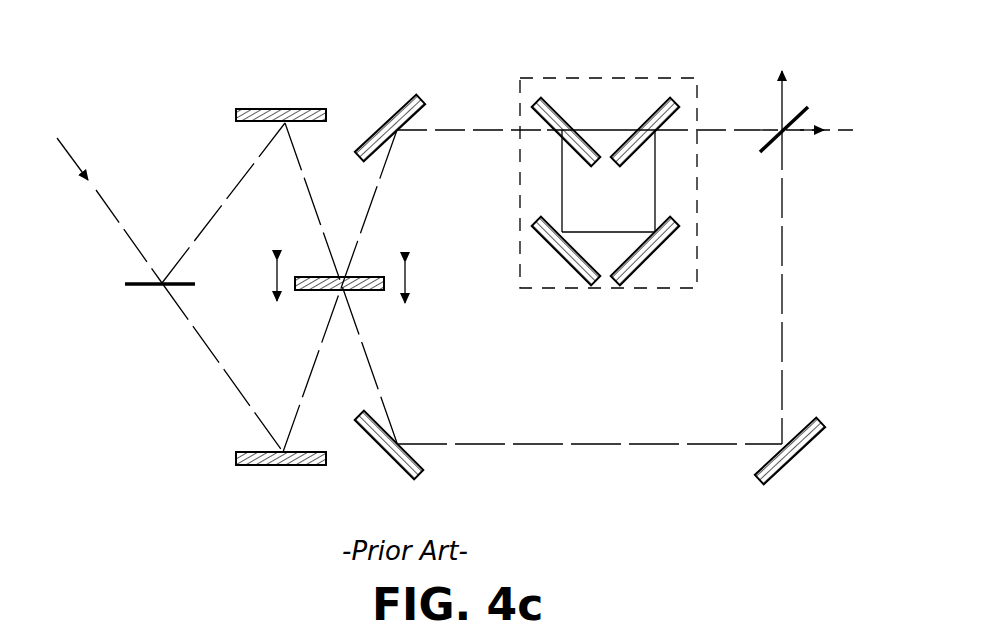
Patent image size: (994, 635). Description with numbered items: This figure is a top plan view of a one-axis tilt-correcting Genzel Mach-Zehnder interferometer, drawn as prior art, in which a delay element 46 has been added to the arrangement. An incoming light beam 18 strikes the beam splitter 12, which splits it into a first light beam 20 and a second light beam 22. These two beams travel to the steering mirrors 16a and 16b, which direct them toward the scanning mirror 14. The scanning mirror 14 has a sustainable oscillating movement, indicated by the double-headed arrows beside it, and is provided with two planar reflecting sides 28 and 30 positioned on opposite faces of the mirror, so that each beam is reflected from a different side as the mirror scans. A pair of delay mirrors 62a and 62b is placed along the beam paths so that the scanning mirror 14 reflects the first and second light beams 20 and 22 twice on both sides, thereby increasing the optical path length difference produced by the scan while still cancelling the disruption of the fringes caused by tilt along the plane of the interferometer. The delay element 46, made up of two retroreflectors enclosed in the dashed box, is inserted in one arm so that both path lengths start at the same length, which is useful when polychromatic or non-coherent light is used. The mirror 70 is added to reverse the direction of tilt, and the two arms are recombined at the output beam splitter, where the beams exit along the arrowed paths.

The beam splitter 12 is at (137, 290).
The scanning mirror 14 is at (377, 273).
The steering mirror 16a is at (263, 107).
The steering mirror 16b is at (247, 467).
The light beam 18 is at (95, 187).
The first light beam 20 is at (220, 210).
The second light beam 22 is at (207, 350).
The reflecting side 28 is at (313, 275).
The reflecting side 30 is at (307, 290).
The delay element 46 is at (660, 80).
The delay mirror 62a is at (420, 95).
The delay mirror 62b is at (418, 480).
The mirror 70 is at (797, 457).